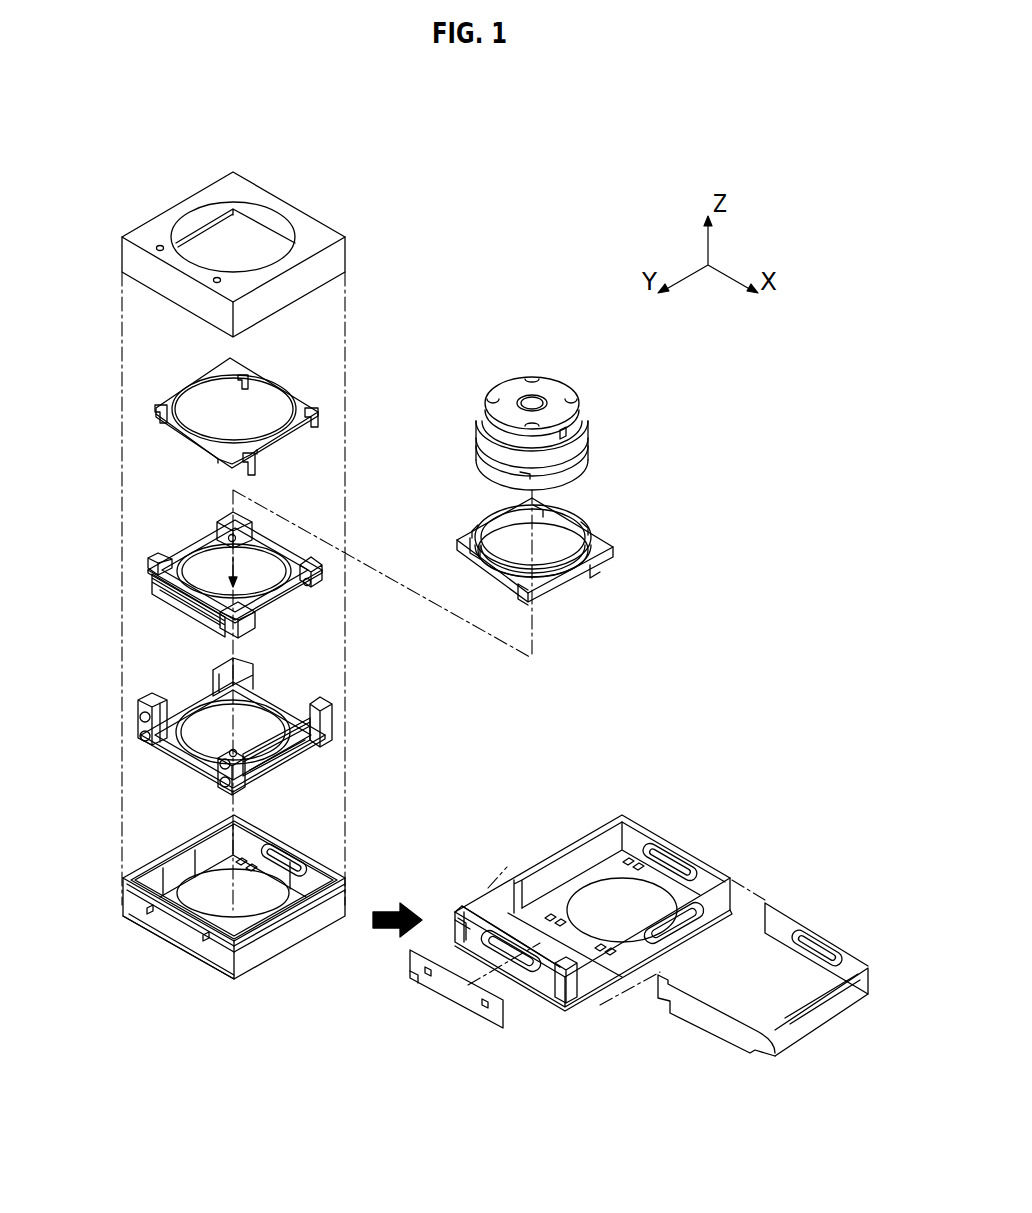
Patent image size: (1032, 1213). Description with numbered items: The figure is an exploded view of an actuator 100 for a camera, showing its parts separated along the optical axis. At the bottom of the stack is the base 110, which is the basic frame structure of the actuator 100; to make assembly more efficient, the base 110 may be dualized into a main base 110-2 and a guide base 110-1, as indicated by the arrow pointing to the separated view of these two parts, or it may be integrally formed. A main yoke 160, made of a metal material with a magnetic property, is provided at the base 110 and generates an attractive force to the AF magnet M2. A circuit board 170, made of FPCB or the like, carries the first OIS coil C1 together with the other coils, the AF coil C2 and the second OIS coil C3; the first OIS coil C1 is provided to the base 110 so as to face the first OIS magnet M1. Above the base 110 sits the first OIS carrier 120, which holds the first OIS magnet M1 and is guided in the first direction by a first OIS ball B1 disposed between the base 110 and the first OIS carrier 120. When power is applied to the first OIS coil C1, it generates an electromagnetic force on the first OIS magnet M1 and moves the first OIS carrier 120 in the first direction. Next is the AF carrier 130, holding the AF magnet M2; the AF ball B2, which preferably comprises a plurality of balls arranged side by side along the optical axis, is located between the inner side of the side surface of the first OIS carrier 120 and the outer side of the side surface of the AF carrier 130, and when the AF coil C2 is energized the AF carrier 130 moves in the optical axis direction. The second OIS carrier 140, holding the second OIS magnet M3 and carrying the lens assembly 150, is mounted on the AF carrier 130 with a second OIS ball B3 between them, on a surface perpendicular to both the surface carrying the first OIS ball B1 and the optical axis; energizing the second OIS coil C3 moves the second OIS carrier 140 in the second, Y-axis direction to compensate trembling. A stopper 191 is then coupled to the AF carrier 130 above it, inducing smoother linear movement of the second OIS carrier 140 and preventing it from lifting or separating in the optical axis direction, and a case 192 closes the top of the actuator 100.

The actuator 100 is at (462, 154).
The base 110 is at (155, 877).
The guide base 110-1 is at (477, 903).
The main base 110-2 is at (568, 863).
The first OIS carrier 120 is at (234, 712).
The AF carrier 130 is at (234, 555).
The second OIS carrier 140 is at (566, 537).
The lens assembly 150 is at (560, 390).
The main yoke 160 is at (463, 997).
The circuit board 170 is at (589, 978).
The stopper 191 is at (156, 407).
The case 192 is at (308, 281).
The first OIS ball B1 is at (142, 737).
The AF ball B2 is at (233, 753).
The second OIS ball B3 is at (307, 582).
The first OIS magnet M1 is at (288, 748).
The AF magnet M2 is at (182, 598).
The second OIS magnet M3 is at (590, 520).
The first OIS coil C1 is at (817, 992).
The AF coil C2 is at (708, 993).
The second OIS coil C3 is at (808, 930).